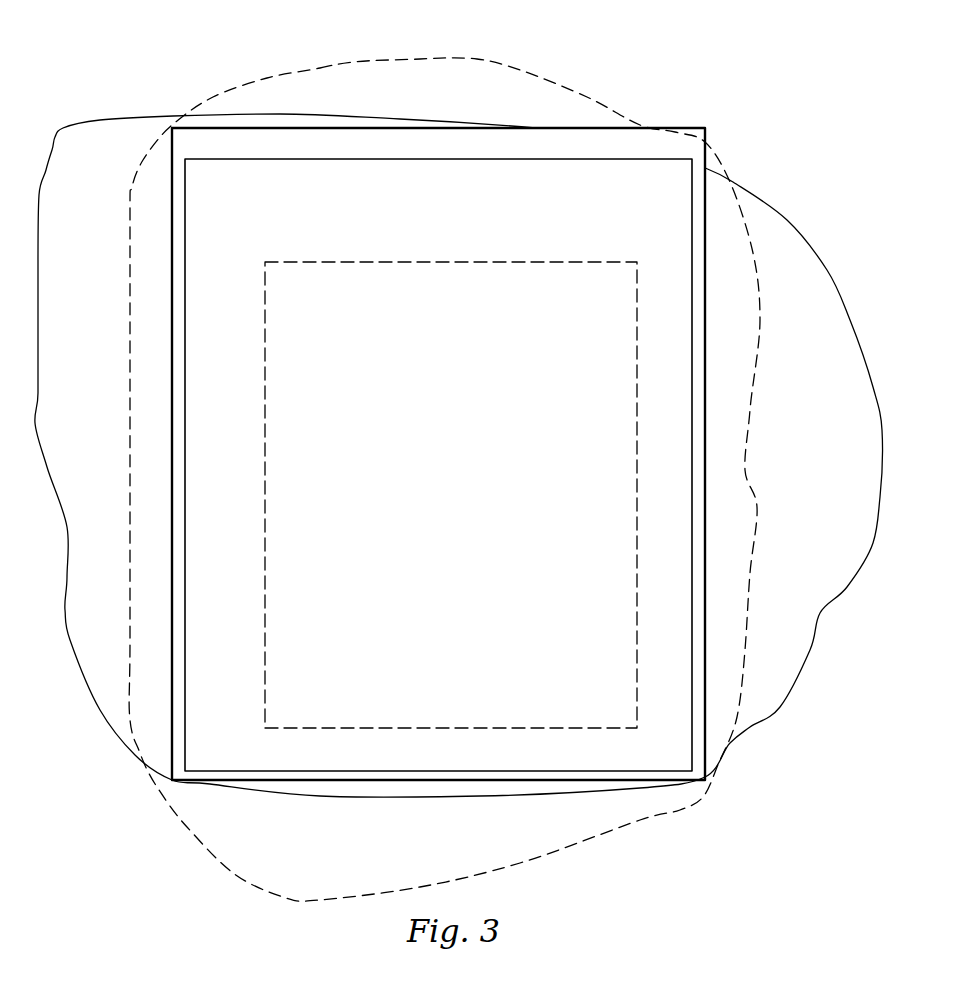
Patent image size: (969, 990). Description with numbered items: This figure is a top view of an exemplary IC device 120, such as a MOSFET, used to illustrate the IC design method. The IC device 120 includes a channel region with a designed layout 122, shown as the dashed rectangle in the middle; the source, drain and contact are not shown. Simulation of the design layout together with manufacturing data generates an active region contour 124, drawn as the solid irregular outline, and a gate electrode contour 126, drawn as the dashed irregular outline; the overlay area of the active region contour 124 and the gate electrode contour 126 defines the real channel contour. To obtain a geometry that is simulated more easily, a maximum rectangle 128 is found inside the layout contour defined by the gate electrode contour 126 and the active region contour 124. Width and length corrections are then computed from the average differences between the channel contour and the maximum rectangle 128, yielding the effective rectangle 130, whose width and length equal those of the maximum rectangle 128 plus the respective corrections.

The IC device 120 is at (642, 61).
The channel region designed layout 122 is at (450, 263).
The active region contour 124 is at (790, 222).
The gate electrode contour 126 is at (587, 840).
The maximum rectangle 128 is at (186, 582).
The effective rectangle 130 is at (172, 322).